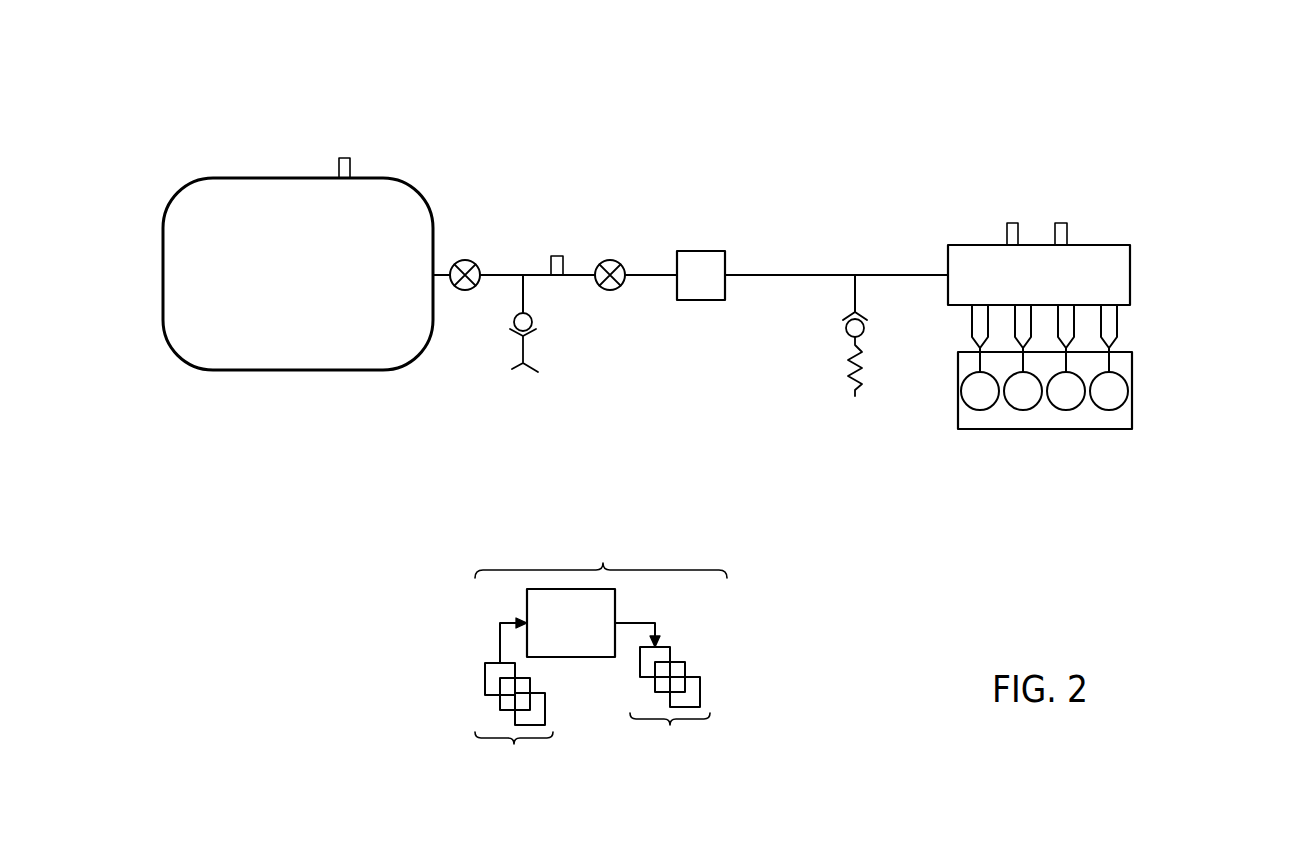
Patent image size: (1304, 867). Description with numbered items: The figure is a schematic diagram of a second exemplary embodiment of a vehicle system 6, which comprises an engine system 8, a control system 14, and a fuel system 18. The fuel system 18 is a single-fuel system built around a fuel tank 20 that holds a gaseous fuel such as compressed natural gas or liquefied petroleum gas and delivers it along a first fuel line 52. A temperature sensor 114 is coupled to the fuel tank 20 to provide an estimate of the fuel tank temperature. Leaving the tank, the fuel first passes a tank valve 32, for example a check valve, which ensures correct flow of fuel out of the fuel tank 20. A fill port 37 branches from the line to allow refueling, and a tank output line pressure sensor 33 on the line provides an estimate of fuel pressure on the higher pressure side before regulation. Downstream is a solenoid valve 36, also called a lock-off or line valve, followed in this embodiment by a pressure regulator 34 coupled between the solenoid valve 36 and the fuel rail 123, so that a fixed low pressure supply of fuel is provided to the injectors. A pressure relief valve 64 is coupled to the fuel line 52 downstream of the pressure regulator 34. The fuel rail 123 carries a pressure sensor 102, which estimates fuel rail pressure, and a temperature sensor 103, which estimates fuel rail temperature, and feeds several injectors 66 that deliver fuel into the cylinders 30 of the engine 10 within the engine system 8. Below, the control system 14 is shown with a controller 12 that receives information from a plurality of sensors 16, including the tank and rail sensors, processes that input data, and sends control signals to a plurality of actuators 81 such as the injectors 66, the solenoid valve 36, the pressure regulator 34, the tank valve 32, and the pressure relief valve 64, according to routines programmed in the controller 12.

The vehicle system 6 is at (604, 43).
The fuel system 18 is at (272, 118).
The fuel tank 20 is at (420, 345).
The temperature sensor 114 is at (338, 166).
The tank valve 32 is at (457, 262).
The tank output line pressure sensor 33 is at (557, 255).
The solenoid valve 36 is at (620, 262).
The fill port 37 is at (513, 370).
The pressure regulator 34 is at (701, 275).
The first fuel line 52 is at (862, 156).
The fuel rail 123 is at (884, 273).
The pressure relief valve 64 is at (848, 404).
The engine system 8 is at (1234, 339).
The injector 66 is at (1118, 323).
The pressure sensor 102 is at (1011, 222).
The temperature sensor 103 is at (1060, 222).
The engine 10 is at (1133, 422).
The cylinders 30 is at (962, 394).
The control system 14 is at (601, 649).
The controller 12 is at (571, 623).
The sensors 16 is at (514, 700).
The actuators 81 is at (664, 694).